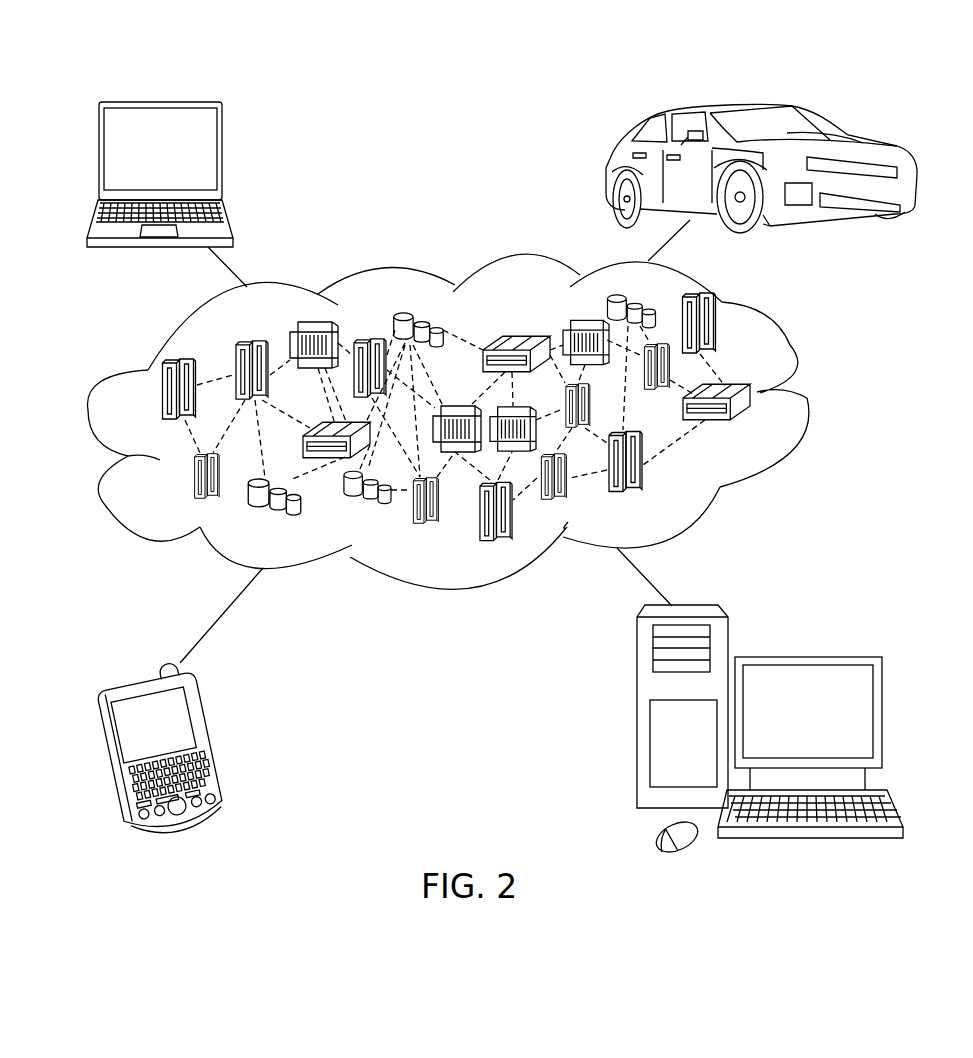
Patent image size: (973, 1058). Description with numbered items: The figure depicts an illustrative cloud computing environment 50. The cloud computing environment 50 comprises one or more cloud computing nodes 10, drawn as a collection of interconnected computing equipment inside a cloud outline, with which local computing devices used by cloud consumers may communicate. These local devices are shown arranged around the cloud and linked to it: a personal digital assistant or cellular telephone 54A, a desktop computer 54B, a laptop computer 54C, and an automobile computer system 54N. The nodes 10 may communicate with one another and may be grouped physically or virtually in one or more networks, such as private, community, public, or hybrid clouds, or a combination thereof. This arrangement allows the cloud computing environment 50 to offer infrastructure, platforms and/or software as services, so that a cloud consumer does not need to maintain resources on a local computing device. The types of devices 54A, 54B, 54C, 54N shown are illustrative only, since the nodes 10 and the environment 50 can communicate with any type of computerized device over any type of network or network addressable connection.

The cloud computing nodes 10 is at (755, 425).
The cloud computing environment 50 is at (807, 398).
The personal digital assistant (PDA) or cellular telephone 54A is at (213, 739).
The desktop computer 54B is at (807, 653).
The laptop computer 54C is at (222, 155).
The automobile computer system 54N is at (612, 170).